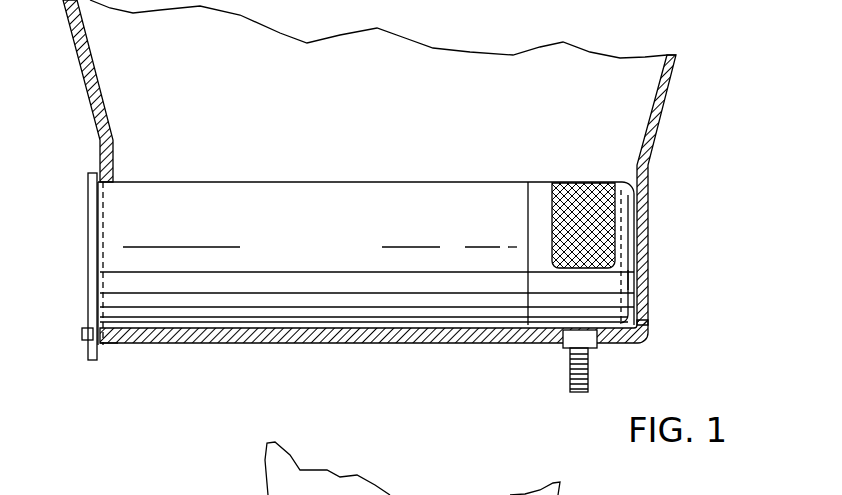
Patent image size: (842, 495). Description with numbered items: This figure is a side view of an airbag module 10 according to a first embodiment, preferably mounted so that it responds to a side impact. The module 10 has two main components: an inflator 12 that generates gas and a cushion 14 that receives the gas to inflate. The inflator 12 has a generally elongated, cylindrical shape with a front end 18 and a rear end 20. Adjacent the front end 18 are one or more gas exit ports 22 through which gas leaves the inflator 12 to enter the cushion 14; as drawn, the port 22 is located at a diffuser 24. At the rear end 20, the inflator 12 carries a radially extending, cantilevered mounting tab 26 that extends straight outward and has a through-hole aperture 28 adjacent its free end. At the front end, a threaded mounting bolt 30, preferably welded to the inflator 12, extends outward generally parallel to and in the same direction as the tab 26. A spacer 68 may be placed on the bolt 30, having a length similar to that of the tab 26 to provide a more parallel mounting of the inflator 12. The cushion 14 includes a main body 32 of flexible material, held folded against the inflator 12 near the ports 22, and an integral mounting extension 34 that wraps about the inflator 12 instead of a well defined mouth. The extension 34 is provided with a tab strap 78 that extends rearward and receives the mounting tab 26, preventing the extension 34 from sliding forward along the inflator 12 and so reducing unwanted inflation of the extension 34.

The airbag module 10 is at (676, 136).
The inflator 12 is at (341, 257).
The cushion 14 is at (673, 72).
The front end 18 is at (627, 278).
The rear end 20 is at (122, 241).
The gas exit ports 22 is at (610, 218).
The diffuser 24 is at (540, 183).
The mounting tab 26 is at (88, 358).
The aperture 28 is at (113, 348).
The mounting bolt 30 is at (588, 368).
The main body 32 is at (91, 56).
The mounting extension 34 is at (117, 163).
The spacer 68 is at (562, 346).
The tab strap 78 is at (82, 332).